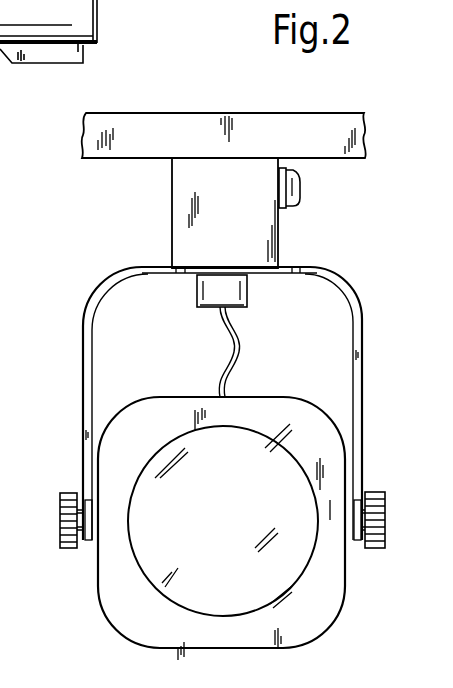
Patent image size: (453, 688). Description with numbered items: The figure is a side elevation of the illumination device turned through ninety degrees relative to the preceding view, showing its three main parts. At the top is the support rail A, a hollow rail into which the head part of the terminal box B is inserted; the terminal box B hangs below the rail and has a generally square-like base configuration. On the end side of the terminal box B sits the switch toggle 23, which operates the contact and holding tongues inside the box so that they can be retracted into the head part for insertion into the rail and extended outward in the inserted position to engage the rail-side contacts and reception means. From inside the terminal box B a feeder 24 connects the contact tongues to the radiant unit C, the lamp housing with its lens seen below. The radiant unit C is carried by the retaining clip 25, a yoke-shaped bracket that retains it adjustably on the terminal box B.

The support rail A is at (191, 118).
The terminal box B is at (172, 238).
The radiant unit C is at (167, 400).
The switch toggle 23 is at (301, 198).
The feeder 24 is at (240, 352).
The retaining clip 25 is at (82, 370).